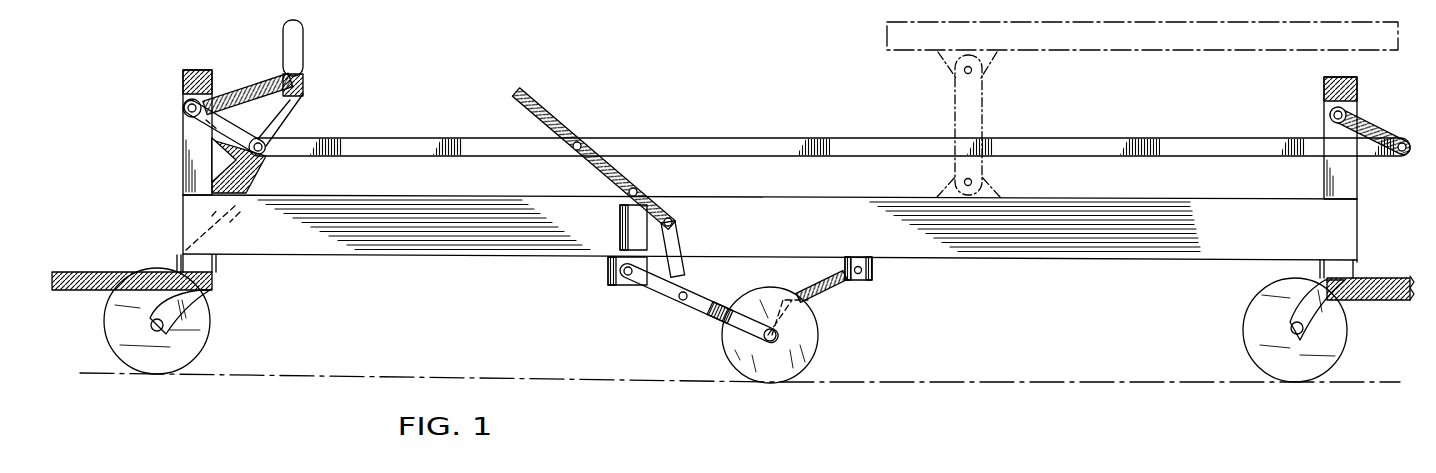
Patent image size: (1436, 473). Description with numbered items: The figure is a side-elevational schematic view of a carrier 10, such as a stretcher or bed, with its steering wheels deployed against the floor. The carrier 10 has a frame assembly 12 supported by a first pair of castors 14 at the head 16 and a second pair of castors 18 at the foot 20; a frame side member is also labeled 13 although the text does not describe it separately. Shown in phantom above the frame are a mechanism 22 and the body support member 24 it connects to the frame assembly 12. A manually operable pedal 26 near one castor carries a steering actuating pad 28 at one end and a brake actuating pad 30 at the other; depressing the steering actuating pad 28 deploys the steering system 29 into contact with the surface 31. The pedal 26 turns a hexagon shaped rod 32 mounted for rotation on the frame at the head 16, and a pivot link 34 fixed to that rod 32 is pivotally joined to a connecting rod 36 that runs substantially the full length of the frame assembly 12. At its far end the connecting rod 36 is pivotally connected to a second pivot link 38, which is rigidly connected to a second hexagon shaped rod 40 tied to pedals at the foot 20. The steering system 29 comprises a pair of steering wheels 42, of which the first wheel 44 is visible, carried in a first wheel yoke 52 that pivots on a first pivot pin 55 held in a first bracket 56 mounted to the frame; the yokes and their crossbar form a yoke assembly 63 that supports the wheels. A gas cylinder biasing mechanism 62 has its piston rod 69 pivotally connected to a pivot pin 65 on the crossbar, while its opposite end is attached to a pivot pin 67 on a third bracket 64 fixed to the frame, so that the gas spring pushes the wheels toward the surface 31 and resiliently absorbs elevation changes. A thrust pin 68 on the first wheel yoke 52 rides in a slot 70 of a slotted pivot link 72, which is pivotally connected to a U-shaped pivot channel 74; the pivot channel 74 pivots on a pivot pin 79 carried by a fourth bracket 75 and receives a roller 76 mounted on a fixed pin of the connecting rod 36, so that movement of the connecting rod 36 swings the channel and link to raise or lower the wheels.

The carrier 10 is at (358, 402).
The frame assembly 12 is at (332, 258).
The frame side member 13 is at (1113, 259).
The first pair of castors 14 is at (158, 375).
The head 16 is at (112, 134).
The second pair of castors 18 is at (1246, 346).
The foot 20 is at (1382, 209).
The mechanism 22 is at (955, 125).
The body support member 24 is at (1108, 50).
The pedal 26 is at (308, 85).
The steering actuating pad 28 is at (183, 240).
The steering system 29 is at (633, 338).
The brake actuating pad 30 is at (283, 36).
The surface 31 is at (668, 372).
The hexagon shaped rod 32 is at (188, 108).
The pivot link 34 is at (252, 102).
The connecting rod 36 is at (768, 137).
The second pivot link 38 is at (1370, 128).
The second hexagon shaped rod 40 is at (1330, 113).
The pair of steering wheels 42 is at (781, 389).
The first wheel 44 is at (820, 339).
The first wheel yoke 52 is at (720, 290).
The first pivot pin 55 is at (626, 287).
The first bracket 56 is at (608, 279).
The gas cylinder biasing mechanism 62 is at (822, 296).
The yoke assembly 63 is at (660, 345).
The third bracket 64 is at (874, 270).
The pivot pin 65 is at (718, 340).
The pivot pin 67 is at (860, 258).
The thrust pin 68 is at (677, 312).
The piston rod 69 is at (780, 293).
The slot 70 is at (690, 266).
The slotted pivot link 72 is at (700, 232).
The pivot channel 74 is at (613, 160).
The fourth bracket 75 is at (623, 208).
The roller 76 is at (598, 143).
The pivot pin 79 is at (633, 170).